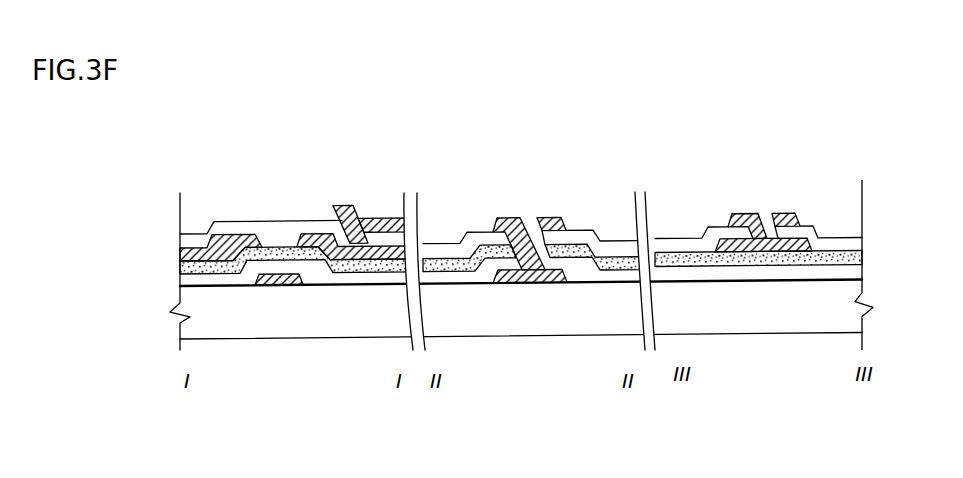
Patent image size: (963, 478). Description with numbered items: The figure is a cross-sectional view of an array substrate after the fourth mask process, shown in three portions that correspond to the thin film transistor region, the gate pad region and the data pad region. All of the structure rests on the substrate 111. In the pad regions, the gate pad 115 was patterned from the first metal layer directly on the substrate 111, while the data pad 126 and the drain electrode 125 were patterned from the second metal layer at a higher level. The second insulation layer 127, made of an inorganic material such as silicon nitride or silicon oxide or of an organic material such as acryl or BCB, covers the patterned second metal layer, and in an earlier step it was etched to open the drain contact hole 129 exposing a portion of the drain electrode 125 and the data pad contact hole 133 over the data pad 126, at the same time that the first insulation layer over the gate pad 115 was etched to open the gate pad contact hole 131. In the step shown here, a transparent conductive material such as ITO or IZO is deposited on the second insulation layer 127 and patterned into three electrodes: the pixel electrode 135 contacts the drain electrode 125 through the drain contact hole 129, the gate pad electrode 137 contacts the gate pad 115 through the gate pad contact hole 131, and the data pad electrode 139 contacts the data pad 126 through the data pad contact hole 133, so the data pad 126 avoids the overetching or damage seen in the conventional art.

The substrate 111 is at (512, 325).
The gate pad 115 is at (549, 274).
The drain electrode 125 is at (303, 230).
The data pad 126 is at (796, 250).
The second insulation layer 127 is at (238, 224).
The drain contact hole 129 is at (365, 226).
The gate pad contact hole 131 is at (528, 212).
The data pad contact hole 133 is at (764, 205).
The pixel electrode 135 is at (341, 206).
The gate pad electrode 137 is at (557, 222).
The data pad electrode 139 is at (788, 220).